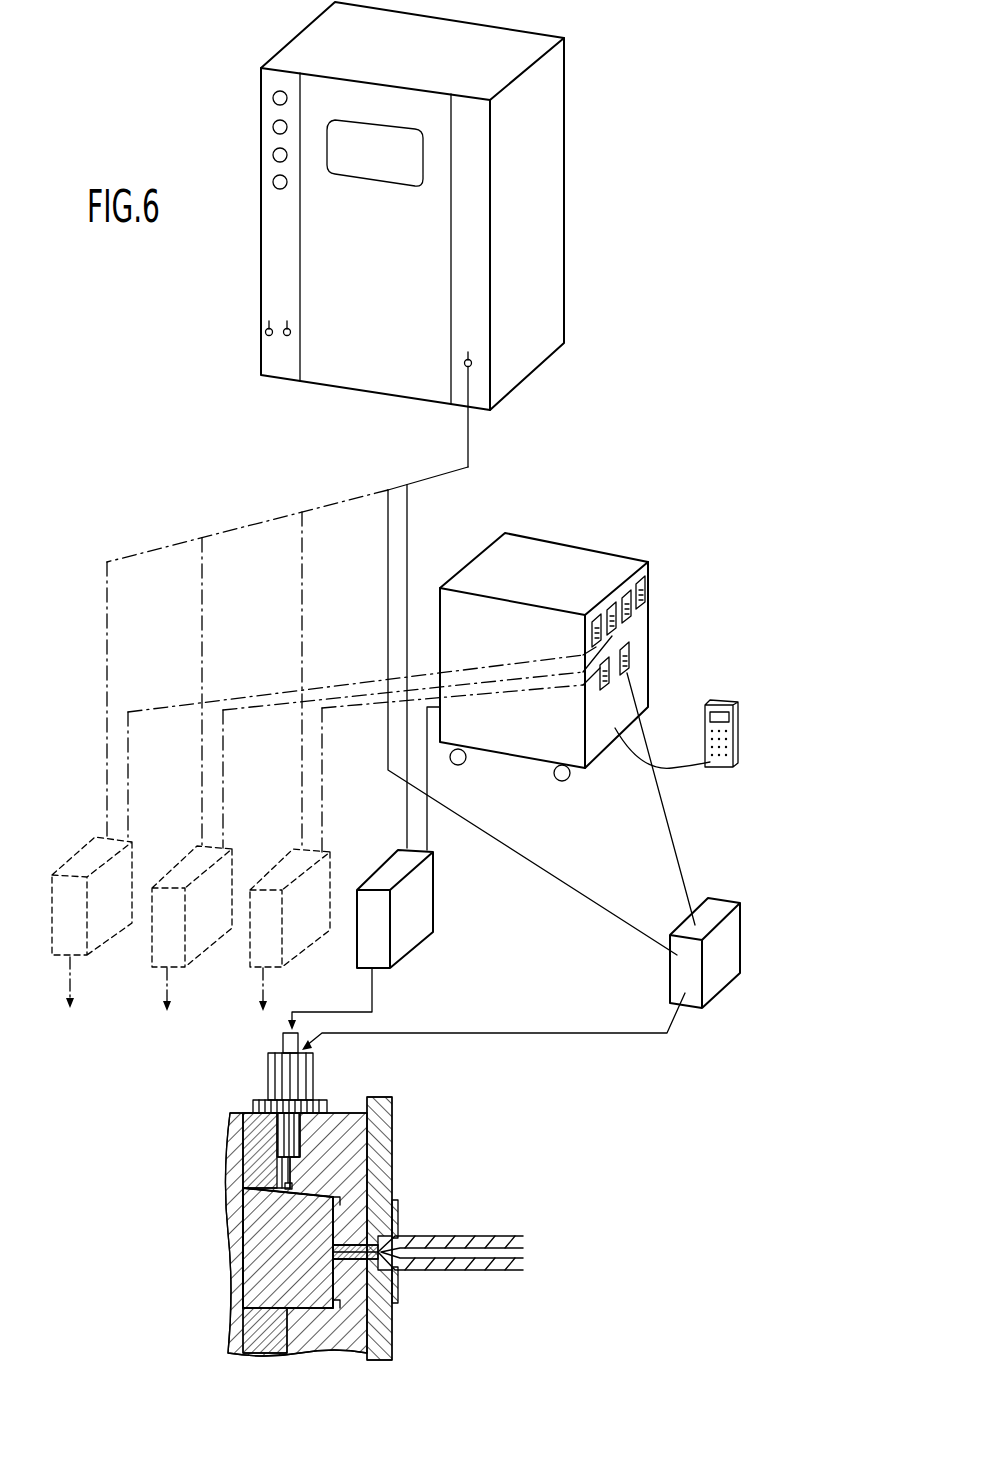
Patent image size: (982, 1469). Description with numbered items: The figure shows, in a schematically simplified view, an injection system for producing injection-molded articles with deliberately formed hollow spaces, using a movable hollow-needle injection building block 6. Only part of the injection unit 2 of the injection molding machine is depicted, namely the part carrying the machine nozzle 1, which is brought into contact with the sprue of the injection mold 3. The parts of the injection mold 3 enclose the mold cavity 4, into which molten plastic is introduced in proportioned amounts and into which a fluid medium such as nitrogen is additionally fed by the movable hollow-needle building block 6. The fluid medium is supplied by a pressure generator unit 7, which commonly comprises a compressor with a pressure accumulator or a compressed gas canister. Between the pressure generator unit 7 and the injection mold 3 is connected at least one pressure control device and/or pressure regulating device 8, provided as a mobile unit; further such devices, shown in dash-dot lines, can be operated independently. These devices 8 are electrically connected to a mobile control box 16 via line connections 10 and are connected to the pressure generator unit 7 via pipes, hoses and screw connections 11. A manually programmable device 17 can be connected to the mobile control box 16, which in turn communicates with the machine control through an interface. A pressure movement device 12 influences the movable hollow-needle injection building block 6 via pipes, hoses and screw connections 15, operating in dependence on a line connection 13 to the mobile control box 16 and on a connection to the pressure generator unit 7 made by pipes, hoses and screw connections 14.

The machine nozzle 1 is at (383, 1272).
The injection unit 2 is at (463, 1276).
The injection mold 3 is at (215, 1195).
The mold cavity 4 is at (303, 1197).
The movable hollow-needle building block 6 is at (280, 1167).
The pressure generator unit 7 is at (540, 233).
The pressure control device and/or pressure regulating device 8 is at (418, 905).
The line connections 10 is at (129, 802).
The pipes, hoses and screw connections 11 is at (280, 515).
The pressure movement device 12 is at (718, 975).
The line connection 13 is at (672, 832).
The pipes, hoses and screw connections 14 is at (528, 860).
The pipes, hoses and screw connections 15 is at (600, 1035).
The mobile control box 16 is at (650, 643).
The manually programmable device 17 is at (720, 700).